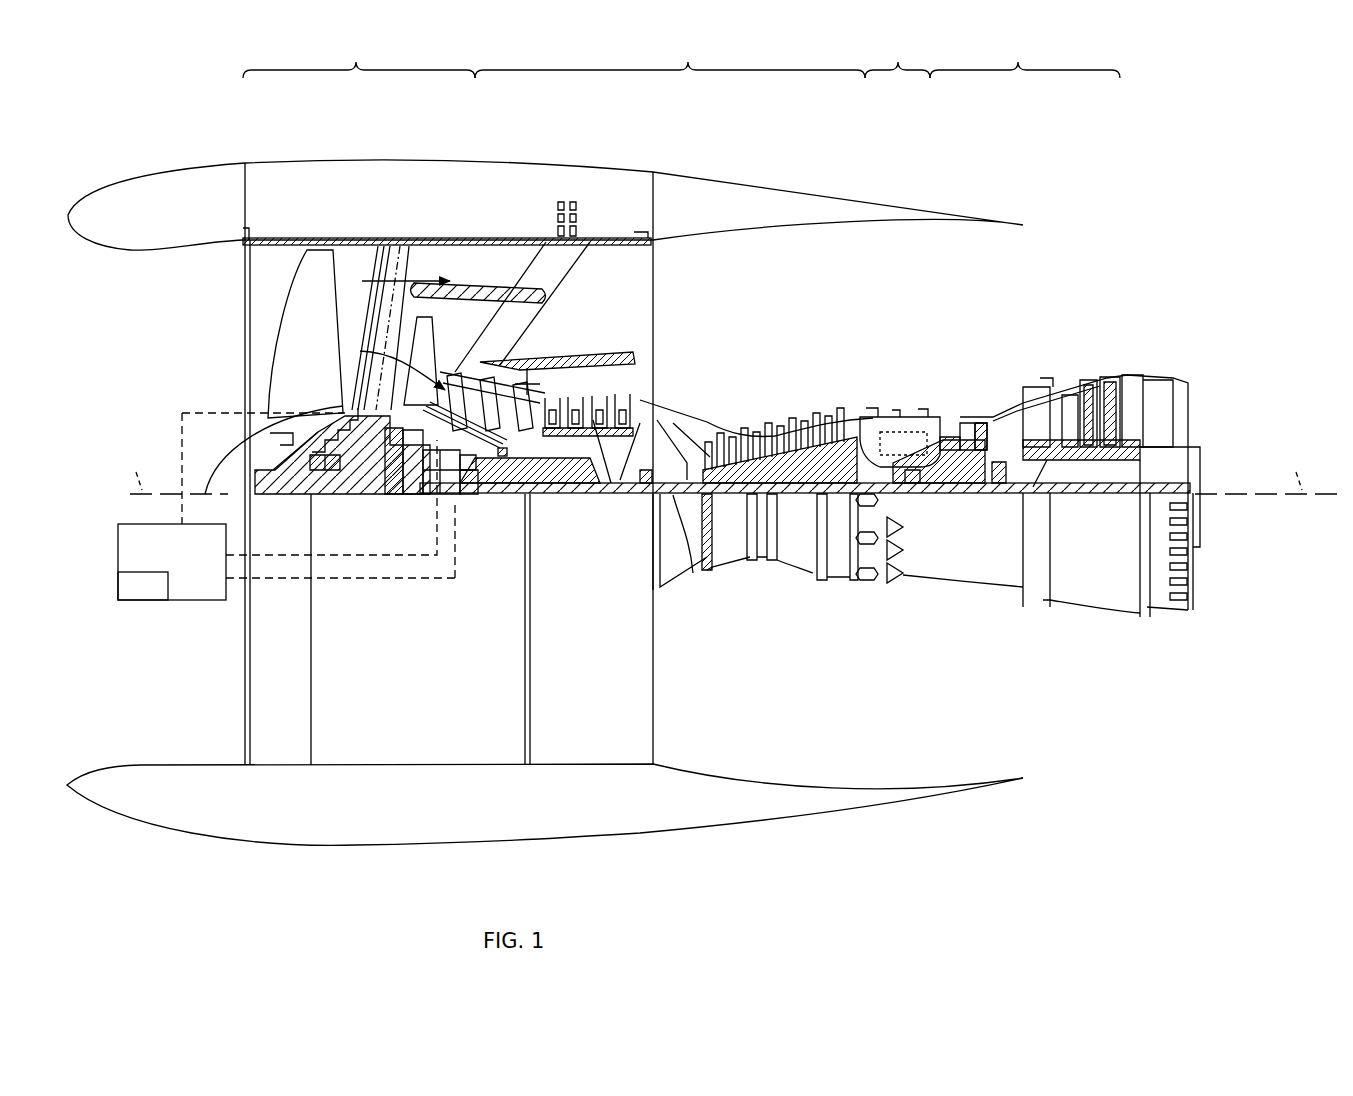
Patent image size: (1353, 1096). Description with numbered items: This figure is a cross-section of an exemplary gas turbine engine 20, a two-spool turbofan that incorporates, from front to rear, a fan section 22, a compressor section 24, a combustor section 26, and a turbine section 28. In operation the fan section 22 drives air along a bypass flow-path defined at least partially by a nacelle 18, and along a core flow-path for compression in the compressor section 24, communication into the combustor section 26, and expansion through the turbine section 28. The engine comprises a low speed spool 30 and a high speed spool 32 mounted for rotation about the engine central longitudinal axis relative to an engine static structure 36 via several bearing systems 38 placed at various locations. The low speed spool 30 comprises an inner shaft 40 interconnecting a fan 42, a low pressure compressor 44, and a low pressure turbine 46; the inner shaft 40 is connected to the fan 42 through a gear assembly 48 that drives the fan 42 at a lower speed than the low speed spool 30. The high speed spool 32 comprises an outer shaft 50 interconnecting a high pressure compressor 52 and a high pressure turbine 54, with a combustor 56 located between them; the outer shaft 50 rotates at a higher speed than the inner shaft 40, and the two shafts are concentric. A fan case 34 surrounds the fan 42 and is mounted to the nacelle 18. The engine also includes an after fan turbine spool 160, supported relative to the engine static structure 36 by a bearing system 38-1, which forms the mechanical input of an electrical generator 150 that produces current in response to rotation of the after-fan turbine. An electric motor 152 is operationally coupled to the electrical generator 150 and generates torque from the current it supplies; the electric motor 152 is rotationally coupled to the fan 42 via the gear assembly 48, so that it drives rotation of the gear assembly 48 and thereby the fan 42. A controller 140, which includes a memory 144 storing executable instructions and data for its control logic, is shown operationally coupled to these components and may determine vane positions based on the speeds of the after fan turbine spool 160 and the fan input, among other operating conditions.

The nacelle 18 is at (213, 183).
The gas turbine engine 20 is at (147, 388).
The fan section 22 is at (359, 54).
The compressor section 24 is at (670, 54).
The combustor section 26 is at (897, 54).
The turbine section 28 is at (1025, 54).
The low speed spool 30 is at (803, 503).
The high speed spool 32 is at (822, 466).
The fan case 34 is at (362, 242).
The engine static structure 36 is at (975, 565).
The bearing systems 38 is at (300, 475).
The bearing system 38-1 is at (510, 453).
The inner shaft 40 is at (690, 556).
The fan 42 is at (429, 330).
The low pressure compressor 44 is at (597, 413).
The low pressure turbine 46 is at (1087, 395).
The gear assembly 48 is at (390, 480).
The outer shaft 50 is at (913, 480).
The high pressure compressor 52 is at (775, 437).
The high pressure turbine 54 is at (950, 432).
The combustor 56 is at (903, 440).
The controller 140 is at (286, 506).
The memory 144 is at (143, 586).
The electrical generator 150 is at (458, 466).
The electric motor 152 is at (432, 462).
The after fan turbine spool 160 is at (480, 457).